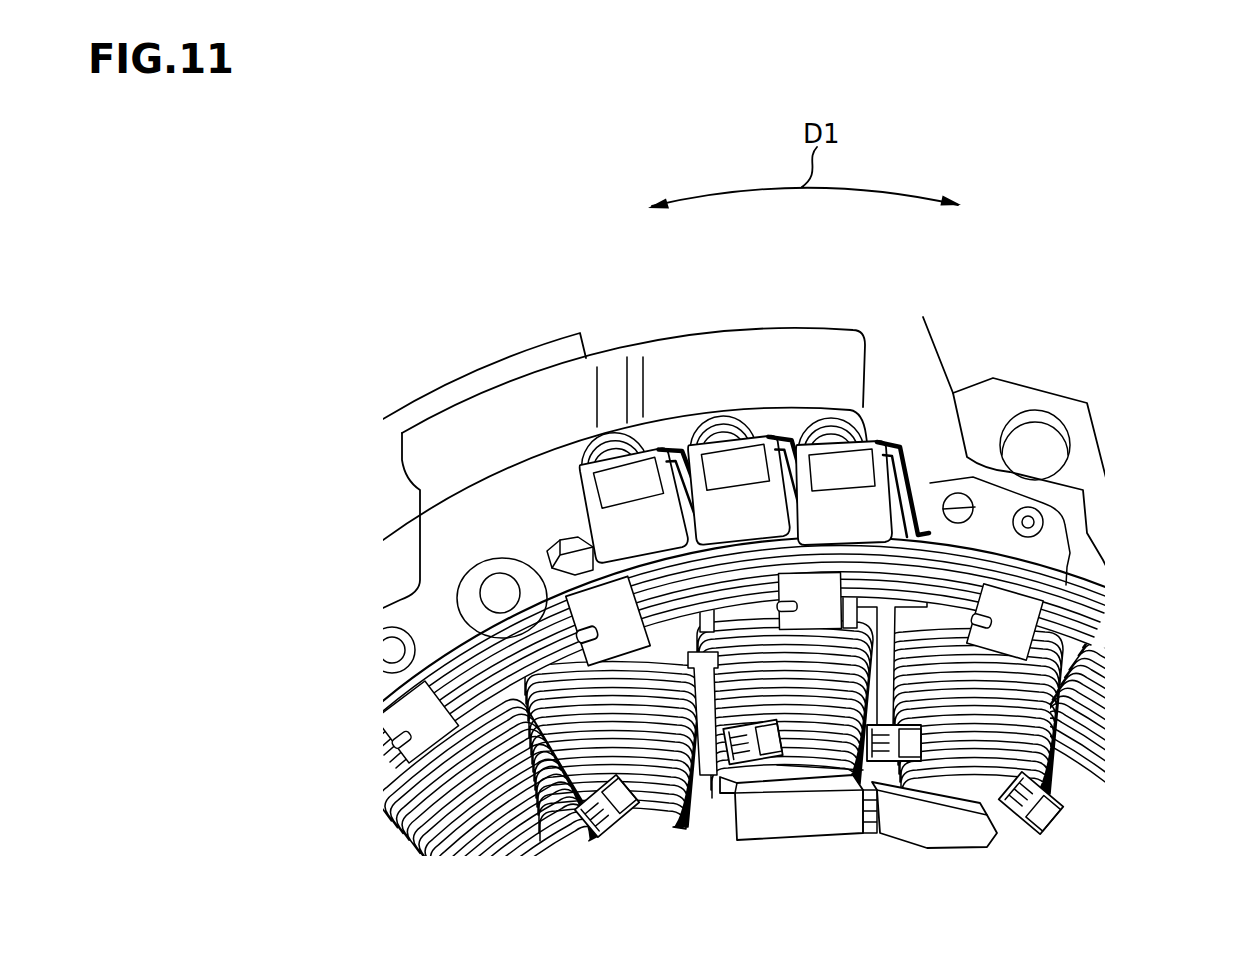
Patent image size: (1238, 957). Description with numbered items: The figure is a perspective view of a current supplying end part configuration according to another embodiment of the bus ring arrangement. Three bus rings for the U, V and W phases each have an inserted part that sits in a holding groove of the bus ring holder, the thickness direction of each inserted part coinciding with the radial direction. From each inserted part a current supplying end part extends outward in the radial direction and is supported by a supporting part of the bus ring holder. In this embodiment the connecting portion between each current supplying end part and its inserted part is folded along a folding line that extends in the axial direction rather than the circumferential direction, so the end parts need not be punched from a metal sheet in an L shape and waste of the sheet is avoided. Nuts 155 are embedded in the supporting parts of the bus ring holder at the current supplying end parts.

The nut 155 is at (833, 463).